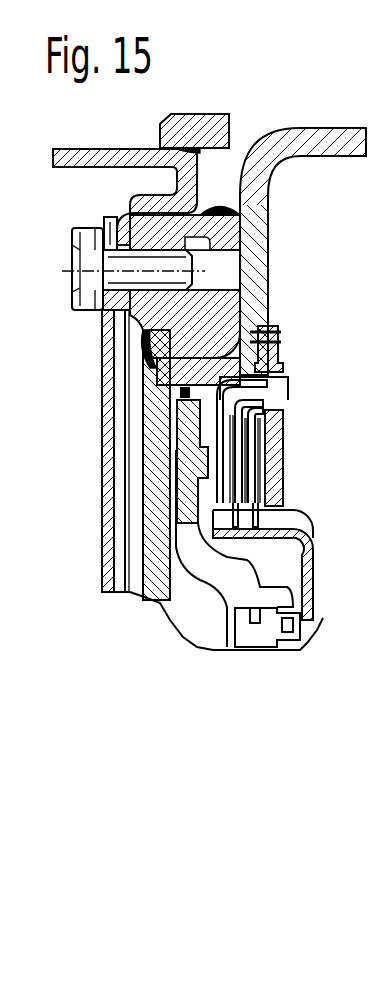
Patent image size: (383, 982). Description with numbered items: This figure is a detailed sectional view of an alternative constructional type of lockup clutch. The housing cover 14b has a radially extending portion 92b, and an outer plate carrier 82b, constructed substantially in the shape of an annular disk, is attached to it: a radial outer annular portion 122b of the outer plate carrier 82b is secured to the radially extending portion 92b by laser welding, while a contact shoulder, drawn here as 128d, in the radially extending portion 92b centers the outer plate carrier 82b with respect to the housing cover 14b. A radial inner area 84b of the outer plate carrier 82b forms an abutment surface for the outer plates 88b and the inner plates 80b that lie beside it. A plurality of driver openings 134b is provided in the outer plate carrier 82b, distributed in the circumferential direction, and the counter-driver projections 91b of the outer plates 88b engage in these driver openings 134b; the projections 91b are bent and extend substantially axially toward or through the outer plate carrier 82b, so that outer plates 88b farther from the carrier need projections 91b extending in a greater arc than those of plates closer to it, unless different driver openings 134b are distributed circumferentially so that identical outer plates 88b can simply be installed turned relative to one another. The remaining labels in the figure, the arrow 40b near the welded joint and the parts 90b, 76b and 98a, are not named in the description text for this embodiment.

The housing cover 14b is at (303, 251).
The radially extending portion 92b is at (257, 230).
The inner surface of cover 128d is at (265, 310).
The plug assembly 40b is at (314, 332).
The radial outer annular portion 122b is at (283, 348).
The counter-driver projections 91b is at (258, 392).
The inner plates 80b is at (257, 447).
The outer plate carrier 82b is at (285, 460).
The radial inner area 84b is at (285, 487).
The housing shell 76b is at (318, 565).
The stepped block 98a is at (250, 635).
The outer plates 88b is at (250, 492).
The driver openings 134b is at (217, 402).
The hub 90b is at (213, 370).